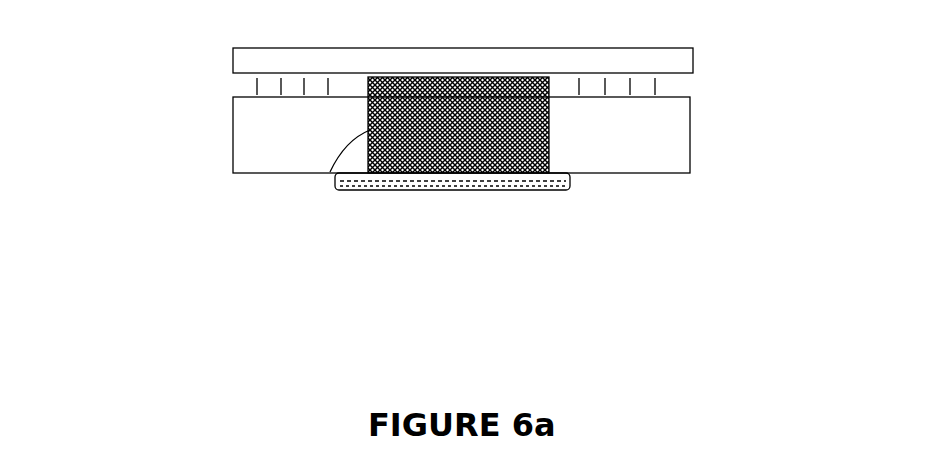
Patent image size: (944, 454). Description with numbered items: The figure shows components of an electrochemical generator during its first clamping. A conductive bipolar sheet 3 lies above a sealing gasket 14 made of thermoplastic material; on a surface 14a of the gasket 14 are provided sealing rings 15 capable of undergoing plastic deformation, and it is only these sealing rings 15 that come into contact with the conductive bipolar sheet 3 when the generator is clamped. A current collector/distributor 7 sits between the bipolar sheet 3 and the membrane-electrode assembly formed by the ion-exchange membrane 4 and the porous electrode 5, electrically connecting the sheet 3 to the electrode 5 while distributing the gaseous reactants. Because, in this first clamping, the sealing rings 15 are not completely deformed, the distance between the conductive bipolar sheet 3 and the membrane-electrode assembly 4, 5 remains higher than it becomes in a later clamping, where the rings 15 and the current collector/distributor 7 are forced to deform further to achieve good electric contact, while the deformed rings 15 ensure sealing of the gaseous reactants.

The conductive bipolar sheet 3 is at (680, 64).
The sealing gasket 14 is at (672, 145).
The surface of the sealing gasket 14a is at (242, 90).
The sealing ring 15 is at (648, 87).
The current collector/distributor 7 is at (323, 190).
The porous electrode 5 is at (350, 190).
The ion-exchange membrane 4 is at (528, 192).